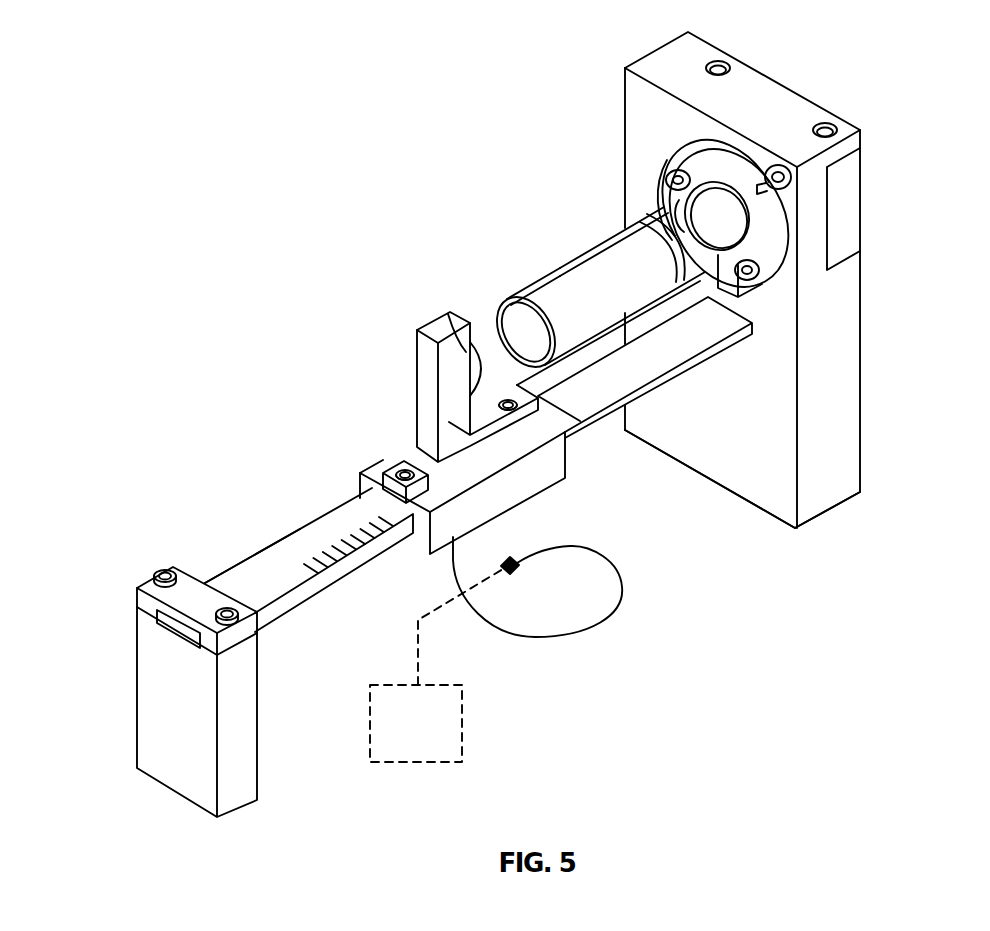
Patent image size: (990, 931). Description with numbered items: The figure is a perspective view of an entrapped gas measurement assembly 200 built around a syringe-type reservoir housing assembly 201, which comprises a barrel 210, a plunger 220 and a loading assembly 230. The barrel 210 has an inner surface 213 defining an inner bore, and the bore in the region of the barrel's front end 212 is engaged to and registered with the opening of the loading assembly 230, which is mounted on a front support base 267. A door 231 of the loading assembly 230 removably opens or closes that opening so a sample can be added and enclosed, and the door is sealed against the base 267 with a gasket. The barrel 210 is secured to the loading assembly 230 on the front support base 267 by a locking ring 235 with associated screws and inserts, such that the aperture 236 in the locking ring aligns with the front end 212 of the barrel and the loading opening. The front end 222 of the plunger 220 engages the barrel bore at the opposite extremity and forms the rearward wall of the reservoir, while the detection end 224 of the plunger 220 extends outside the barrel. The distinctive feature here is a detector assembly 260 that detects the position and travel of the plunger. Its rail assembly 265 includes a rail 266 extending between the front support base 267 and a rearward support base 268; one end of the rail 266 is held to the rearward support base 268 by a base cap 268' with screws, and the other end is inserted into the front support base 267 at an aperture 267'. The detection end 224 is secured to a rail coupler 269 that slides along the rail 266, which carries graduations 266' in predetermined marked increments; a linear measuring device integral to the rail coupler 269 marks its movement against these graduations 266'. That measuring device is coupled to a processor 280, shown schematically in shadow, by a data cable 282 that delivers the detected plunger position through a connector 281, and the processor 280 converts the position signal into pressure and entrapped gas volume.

The entrapped gas measurement assembly 200 is at (218, 262).
The reservoir housing assembly 201 is at (504, 191).
The barrel 210 is at (518, 284).
The front end 212 is at (790, 258).
The inner surface 213 is at (593, 260).
The plunger 220 is at (483, 308).
The front end 222 is at (750, 216).
The detection end 224 is at (451, 343).
The loading assembly 230 is at (868, 142).
The door 231 is at (718, 203).
The locking ring 235 is at (792, 172).
The aperture 236 is at (670, 182).
The detector assembly 260 is at (550, 469).
The rail assembly 265 is at (280, 530).
The rail 266 is at (280, 514).
The graduations 266' is at (348, 581).
The front support base 267 is at (799, 474).
The aperture 267' is at (750, 367).
The rearward support base 268 is at (141, 692).
The base cap 268' is at (182, 553).
The rail coupler 269 is at (410, 428).
The processor 280 is at (370, 730).
The connector 281 is at (516, 556).
The data cable 282 is at (538, 637).